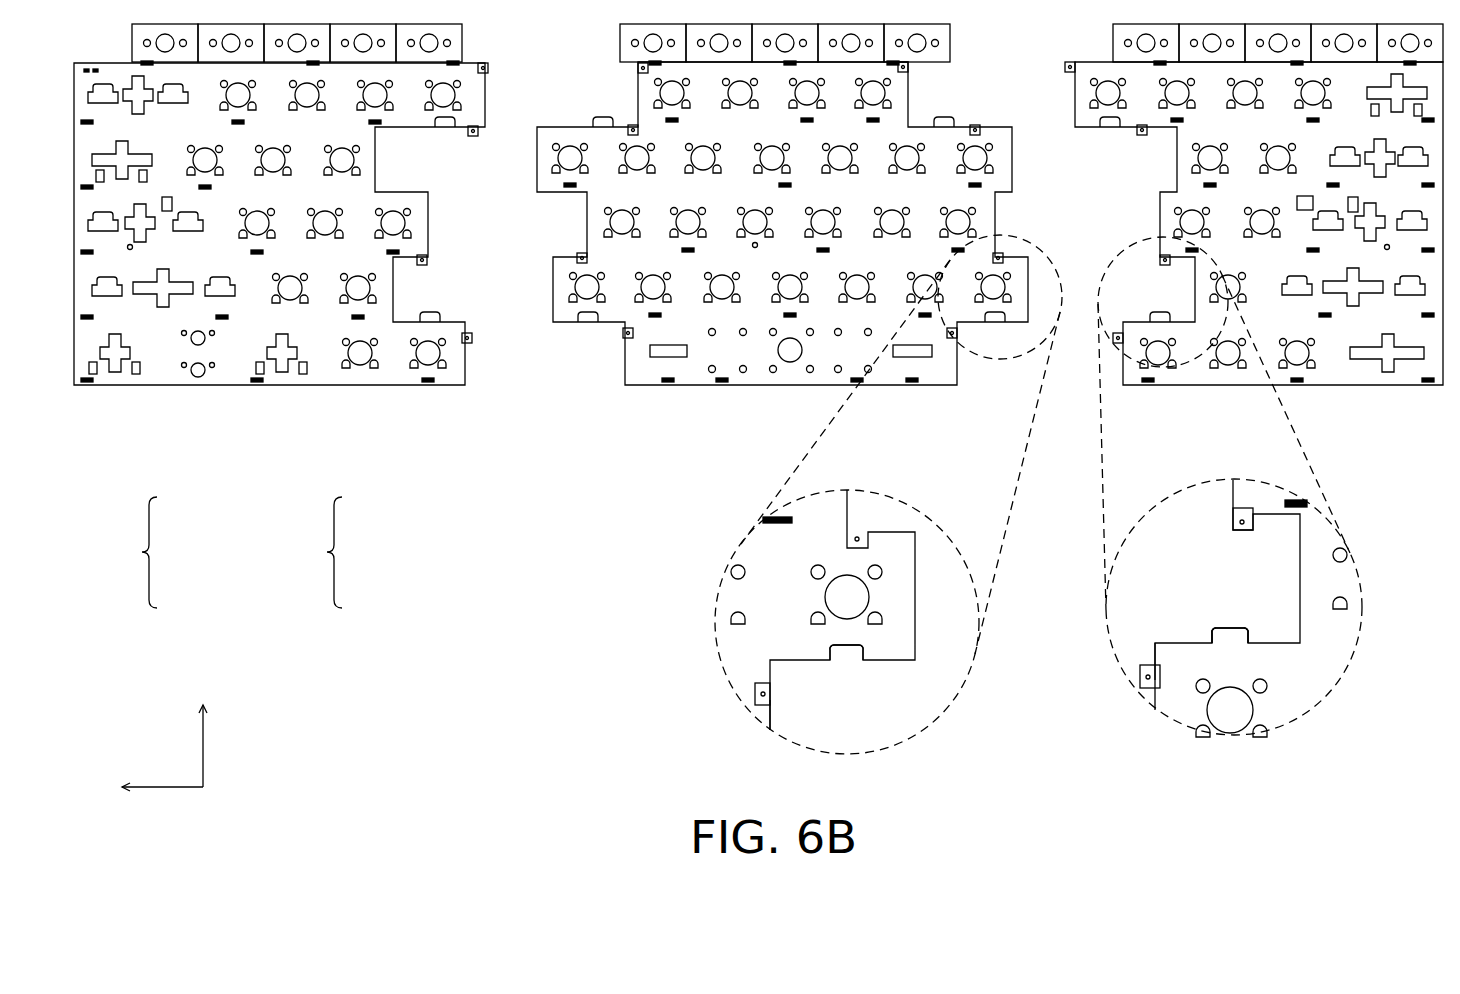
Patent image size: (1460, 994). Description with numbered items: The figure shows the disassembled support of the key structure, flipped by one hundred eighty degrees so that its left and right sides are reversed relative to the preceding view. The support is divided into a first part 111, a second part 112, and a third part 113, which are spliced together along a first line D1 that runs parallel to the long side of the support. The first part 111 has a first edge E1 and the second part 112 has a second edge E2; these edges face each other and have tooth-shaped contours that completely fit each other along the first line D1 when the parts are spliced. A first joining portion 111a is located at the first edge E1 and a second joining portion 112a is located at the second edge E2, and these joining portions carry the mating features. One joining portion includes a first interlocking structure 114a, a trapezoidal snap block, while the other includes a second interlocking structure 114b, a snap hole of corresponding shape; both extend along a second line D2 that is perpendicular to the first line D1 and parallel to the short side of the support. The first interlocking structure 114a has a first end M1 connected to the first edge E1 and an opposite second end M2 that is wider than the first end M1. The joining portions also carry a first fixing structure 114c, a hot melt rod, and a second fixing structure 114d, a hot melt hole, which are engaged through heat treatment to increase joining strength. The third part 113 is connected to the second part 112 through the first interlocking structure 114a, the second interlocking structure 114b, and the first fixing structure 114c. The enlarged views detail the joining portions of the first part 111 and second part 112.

The first part 111 is at (1340, 378).
The second part 112 is at (793, 378).
The third part 113 is at (327, 377).
The first joining portion 111a is at (148, 551).
The second joining portion 112a is at (331, 551).
The first interlocking structure 114a is at (1240, 627).
The second interlocking structure 114b is at (847, 638).
The first fixing structure 114c is at (1240, 522).
The second fixing structure 114d is at (863, 535).
The first end M1 is at (1210, 642).
The second end M2 is at (1215, 620).
The first edge E1 is at (1155, 657).
The second edge E2 is at (772, 715).
The first line D1 is at (140, 788).
The second line D2 is at (207, 727).